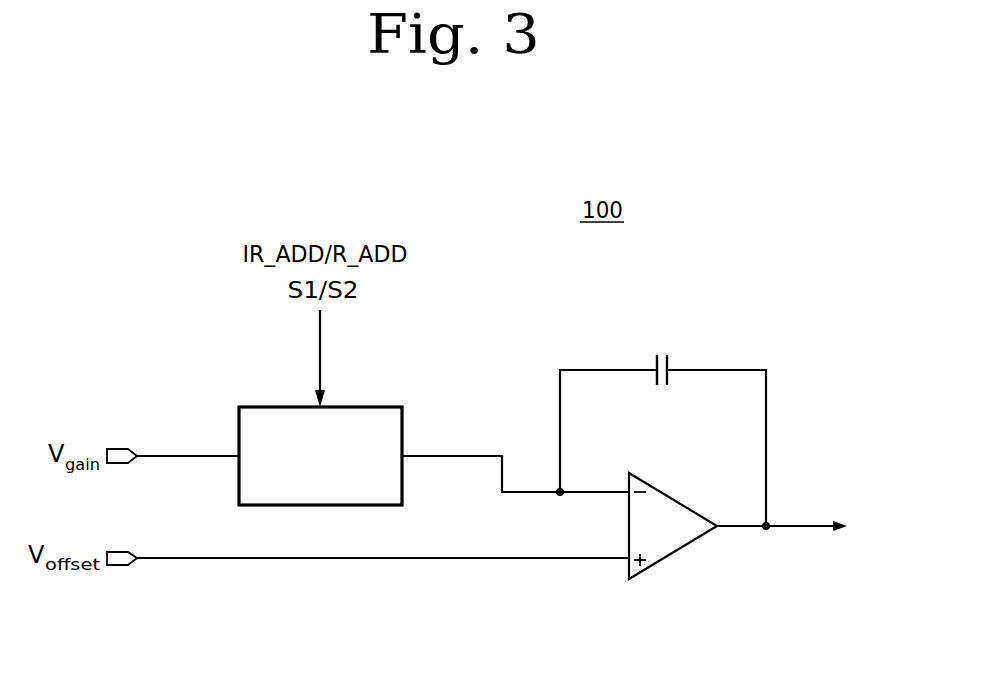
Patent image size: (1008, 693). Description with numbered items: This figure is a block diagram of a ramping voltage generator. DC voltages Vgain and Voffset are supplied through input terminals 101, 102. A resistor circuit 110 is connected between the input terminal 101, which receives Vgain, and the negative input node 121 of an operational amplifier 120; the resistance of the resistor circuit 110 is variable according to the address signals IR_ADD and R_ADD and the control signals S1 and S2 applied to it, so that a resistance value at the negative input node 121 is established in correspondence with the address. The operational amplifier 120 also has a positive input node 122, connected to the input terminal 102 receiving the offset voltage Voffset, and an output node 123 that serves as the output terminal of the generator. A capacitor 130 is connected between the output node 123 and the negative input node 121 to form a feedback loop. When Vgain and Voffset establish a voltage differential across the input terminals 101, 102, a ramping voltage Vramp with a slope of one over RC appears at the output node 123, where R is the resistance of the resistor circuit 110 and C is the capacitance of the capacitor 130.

The input terminal 101 is at (116, 448).
The input terminal 102 is at (115, 566).
The resistor circuit 110 is at (369, 405).
The operational amplifier 120 is at (675, 553).
The negative input node 121 is at (625, 488).
The positive input node 122 is at (627, 561).
The output node 123 is at (765, 531).
The capacitor 130 is at (663, 352).